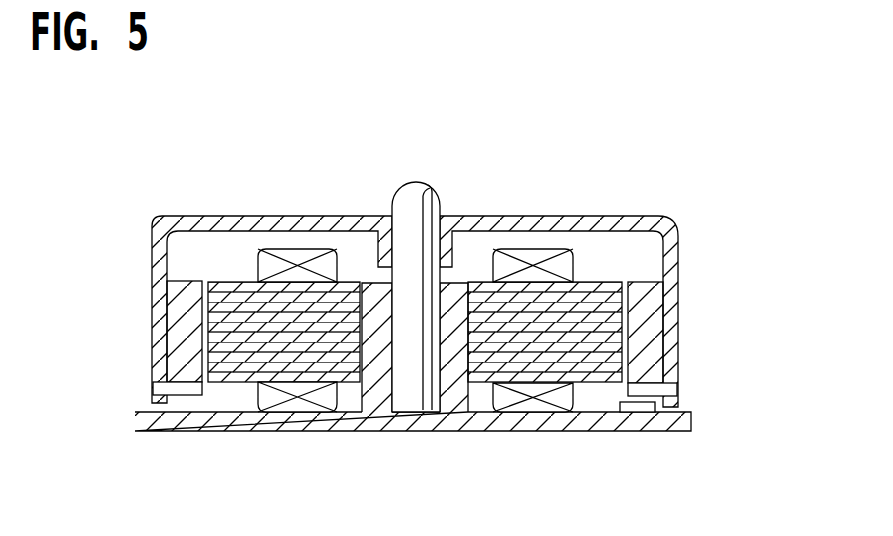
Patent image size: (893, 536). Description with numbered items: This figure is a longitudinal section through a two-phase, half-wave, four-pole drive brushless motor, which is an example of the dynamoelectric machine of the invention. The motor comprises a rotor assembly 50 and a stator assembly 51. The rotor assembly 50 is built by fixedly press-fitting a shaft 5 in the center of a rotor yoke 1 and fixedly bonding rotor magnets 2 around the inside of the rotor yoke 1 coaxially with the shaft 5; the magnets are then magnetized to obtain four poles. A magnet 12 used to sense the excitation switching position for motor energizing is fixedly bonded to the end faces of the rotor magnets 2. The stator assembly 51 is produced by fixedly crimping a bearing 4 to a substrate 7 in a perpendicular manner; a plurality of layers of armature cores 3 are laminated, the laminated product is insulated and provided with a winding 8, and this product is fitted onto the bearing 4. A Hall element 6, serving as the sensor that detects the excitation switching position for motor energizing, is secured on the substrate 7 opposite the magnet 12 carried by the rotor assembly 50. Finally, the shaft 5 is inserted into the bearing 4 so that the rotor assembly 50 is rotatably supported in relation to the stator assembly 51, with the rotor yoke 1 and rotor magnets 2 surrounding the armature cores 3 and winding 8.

The rotor assembly 50 is at (200, 203).
The rotor yoke 1 is at (637, 223).
The rotor magnets 2 is at (650, 318).
The armature cores 3 is at (252, 308).
The bearing 4 is at (452, 403).
The shaft 5 is at (415, 196).
The Hall element 6 is at (635, 410).
The substrate 7 is at (550, 420).
The winding 8 is at (536, 260).
The magnet for sensing excitation switching position 12 is at (655, 388).
The stator assembly 51 is at (231, 391).